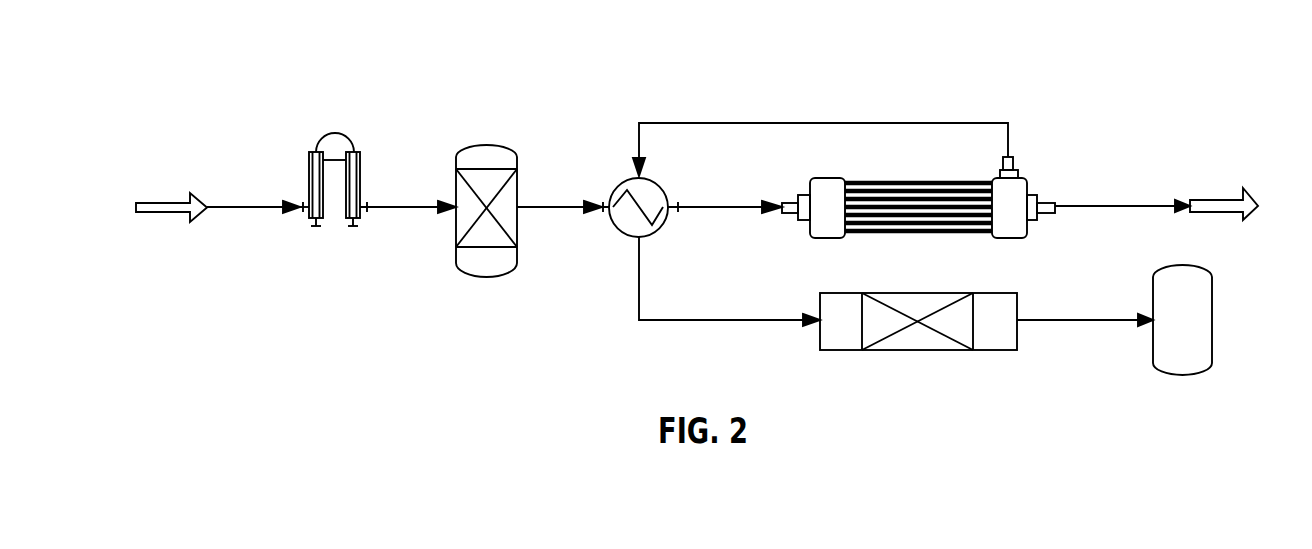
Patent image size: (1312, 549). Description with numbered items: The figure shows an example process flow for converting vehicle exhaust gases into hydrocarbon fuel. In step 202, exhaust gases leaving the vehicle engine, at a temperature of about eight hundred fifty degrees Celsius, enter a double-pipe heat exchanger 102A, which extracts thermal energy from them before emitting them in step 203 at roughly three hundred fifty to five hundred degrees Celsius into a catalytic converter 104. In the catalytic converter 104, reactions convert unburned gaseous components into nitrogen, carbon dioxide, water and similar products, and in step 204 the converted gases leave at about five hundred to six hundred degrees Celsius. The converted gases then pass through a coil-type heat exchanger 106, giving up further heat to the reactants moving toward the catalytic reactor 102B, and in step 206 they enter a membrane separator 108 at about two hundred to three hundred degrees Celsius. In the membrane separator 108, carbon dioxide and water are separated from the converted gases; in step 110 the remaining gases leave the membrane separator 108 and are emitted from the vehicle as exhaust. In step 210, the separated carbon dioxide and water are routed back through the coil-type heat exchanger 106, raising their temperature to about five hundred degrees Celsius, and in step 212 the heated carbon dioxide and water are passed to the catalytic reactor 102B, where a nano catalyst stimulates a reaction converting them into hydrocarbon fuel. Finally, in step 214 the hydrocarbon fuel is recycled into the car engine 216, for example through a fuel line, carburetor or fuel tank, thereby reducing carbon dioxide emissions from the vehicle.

The double-pipe heat exchanger 102A is at (305, 156).
The catalytic reactor 102B is at (894, 344).
The catalytic converter 104 is at (463, 188).
The coil-type heat exchanger 106 is at (608, 186).
The membrane separator 108 is at (944, 187).
The exhaust 110 is at (1122, 207).
The exhaust gas entry step 202 is at (258, 208).
The exhaust gas emission step 203 is at (408, 208).
The converted gas exit step 204 is at (563, 208).
The membrane separator entry step 206 is at (725, 208).
The separated CO2 and H2O heating step 210 is at (820, 145).
The heated CO2 and H2O transfer step 212 is at (729, 284).
The hydrocarbon fuel recycling step 214 is at (1085, 321).
The car engine 216 is at (1152, 342).